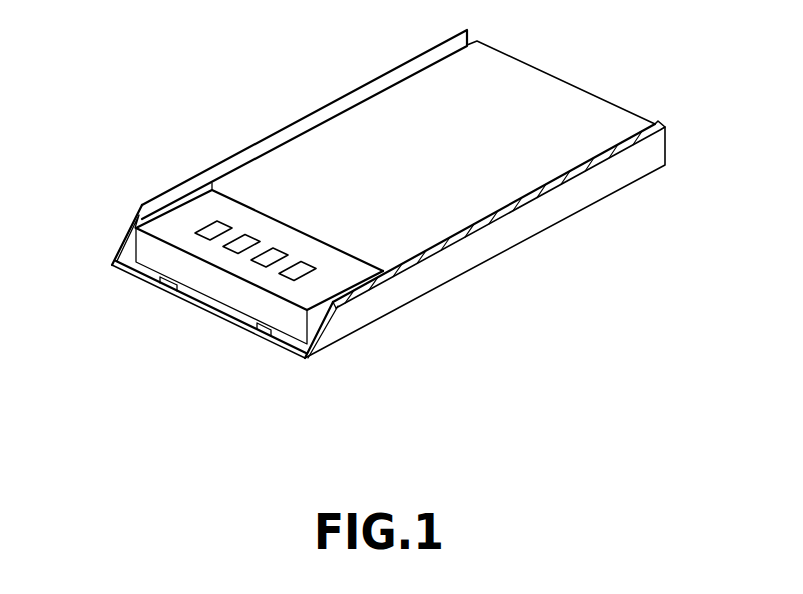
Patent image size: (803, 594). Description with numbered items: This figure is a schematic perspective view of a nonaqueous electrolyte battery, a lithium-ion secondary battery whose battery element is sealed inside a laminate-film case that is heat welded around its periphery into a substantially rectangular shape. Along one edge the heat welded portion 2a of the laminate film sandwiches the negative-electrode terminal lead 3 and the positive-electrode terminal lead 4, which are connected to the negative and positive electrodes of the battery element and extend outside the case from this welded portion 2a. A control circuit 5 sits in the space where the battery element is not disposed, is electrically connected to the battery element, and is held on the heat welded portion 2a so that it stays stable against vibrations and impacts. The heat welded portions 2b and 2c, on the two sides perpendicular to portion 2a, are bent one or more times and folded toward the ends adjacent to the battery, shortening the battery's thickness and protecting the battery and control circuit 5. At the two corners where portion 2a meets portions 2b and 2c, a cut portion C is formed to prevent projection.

The heat welded portion 2a is at (205, 305).
The heat welded portion 2b is at (357, 88).
The heat welded portion 2c is at (607, 182).
The negative-electrode terminal lead 3 is at (263, 333).
The positive-electrode terminal lead 4 is at (162, 285).
The control circuit 5 is at (175, 217).
The cut portion C is at (118, 243).